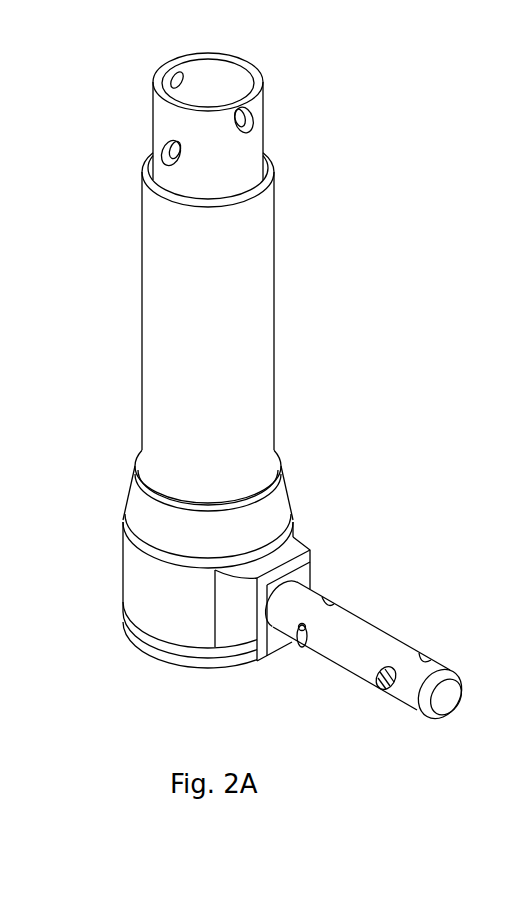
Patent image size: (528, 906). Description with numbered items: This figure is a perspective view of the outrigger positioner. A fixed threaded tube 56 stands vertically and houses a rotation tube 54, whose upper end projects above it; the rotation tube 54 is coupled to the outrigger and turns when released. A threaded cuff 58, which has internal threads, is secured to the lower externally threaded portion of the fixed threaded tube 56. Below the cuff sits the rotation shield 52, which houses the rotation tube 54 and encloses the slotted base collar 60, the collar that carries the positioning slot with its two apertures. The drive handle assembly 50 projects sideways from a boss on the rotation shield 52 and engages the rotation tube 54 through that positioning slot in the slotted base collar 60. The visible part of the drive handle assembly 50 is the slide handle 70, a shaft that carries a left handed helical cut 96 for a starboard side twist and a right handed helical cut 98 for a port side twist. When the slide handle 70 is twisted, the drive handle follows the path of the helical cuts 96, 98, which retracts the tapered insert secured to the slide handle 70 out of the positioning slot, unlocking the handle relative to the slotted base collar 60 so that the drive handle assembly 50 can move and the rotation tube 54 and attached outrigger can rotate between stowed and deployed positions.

The drive handle assembly 50 is at (282, 685).
The rotation shield 52 is at (290, 581).
The rotation tube 54 is at (259, 116).
The fixed threaded tube 56 is at (254, 301).
The threaded cuff 58 is at (244, 475).
The slotted base collar 60 is at (197, 612).
The slide handle 70 is at (387, 632).
The left handed helical cut 96 is at (453, 639).
The right handed helical cut 98 is at (359, 691).